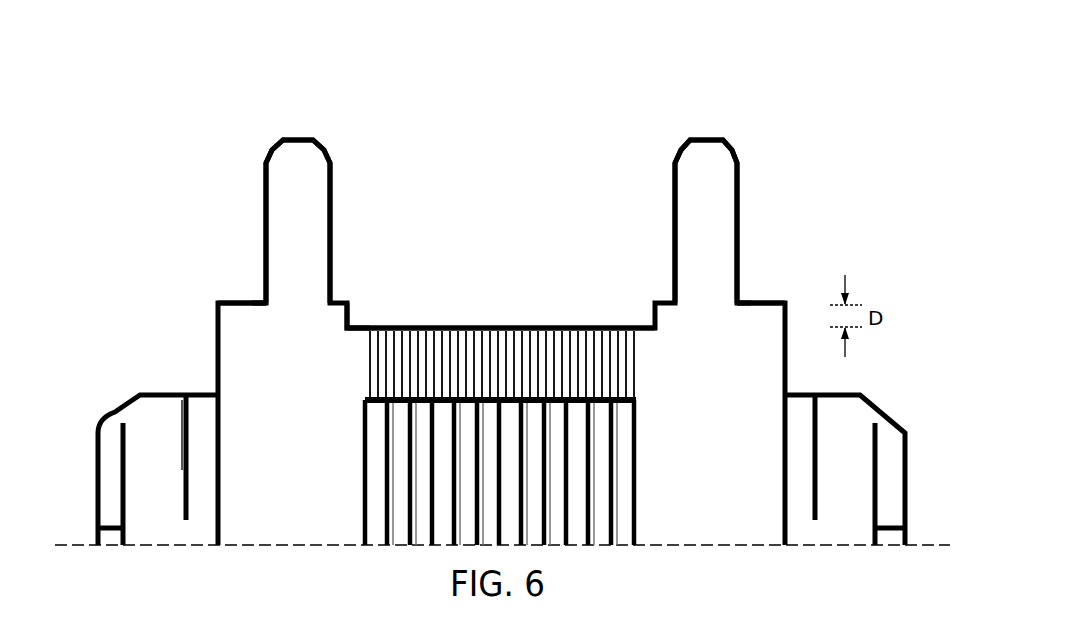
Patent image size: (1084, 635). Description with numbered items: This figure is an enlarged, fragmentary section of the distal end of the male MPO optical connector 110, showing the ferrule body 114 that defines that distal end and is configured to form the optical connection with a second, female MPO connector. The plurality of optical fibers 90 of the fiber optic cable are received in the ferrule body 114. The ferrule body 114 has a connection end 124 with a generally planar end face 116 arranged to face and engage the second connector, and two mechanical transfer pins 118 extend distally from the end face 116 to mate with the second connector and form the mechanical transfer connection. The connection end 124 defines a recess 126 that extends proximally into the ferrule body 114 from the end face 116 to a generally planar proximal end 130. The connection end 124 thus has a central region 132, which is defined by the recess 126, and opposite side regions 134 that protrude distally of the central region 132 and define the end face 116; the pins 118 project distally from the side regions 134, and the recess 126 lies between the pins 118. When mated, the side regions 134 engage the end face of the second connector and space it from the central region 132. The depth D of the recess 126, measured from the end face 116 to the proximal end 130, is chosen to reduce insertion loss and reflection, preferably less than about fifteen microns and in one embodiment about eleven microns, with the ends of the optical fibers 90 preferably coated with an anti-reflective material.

The MPO optical connector 110 is at (200, 105).
The ferrule body 114 is at (205, 282).
The end face 116 is at (763, 302).
The pins 118 is at (294, 178).
The connection end 124 is at (152, 352).
The recess 126 is at (460, 310).
The proximal end 130 is at (362, 320).
The central region 132 is at (570, 302).
The side regions 134 is at (243, 282).
The optical fibers 90 is at (648, 358).